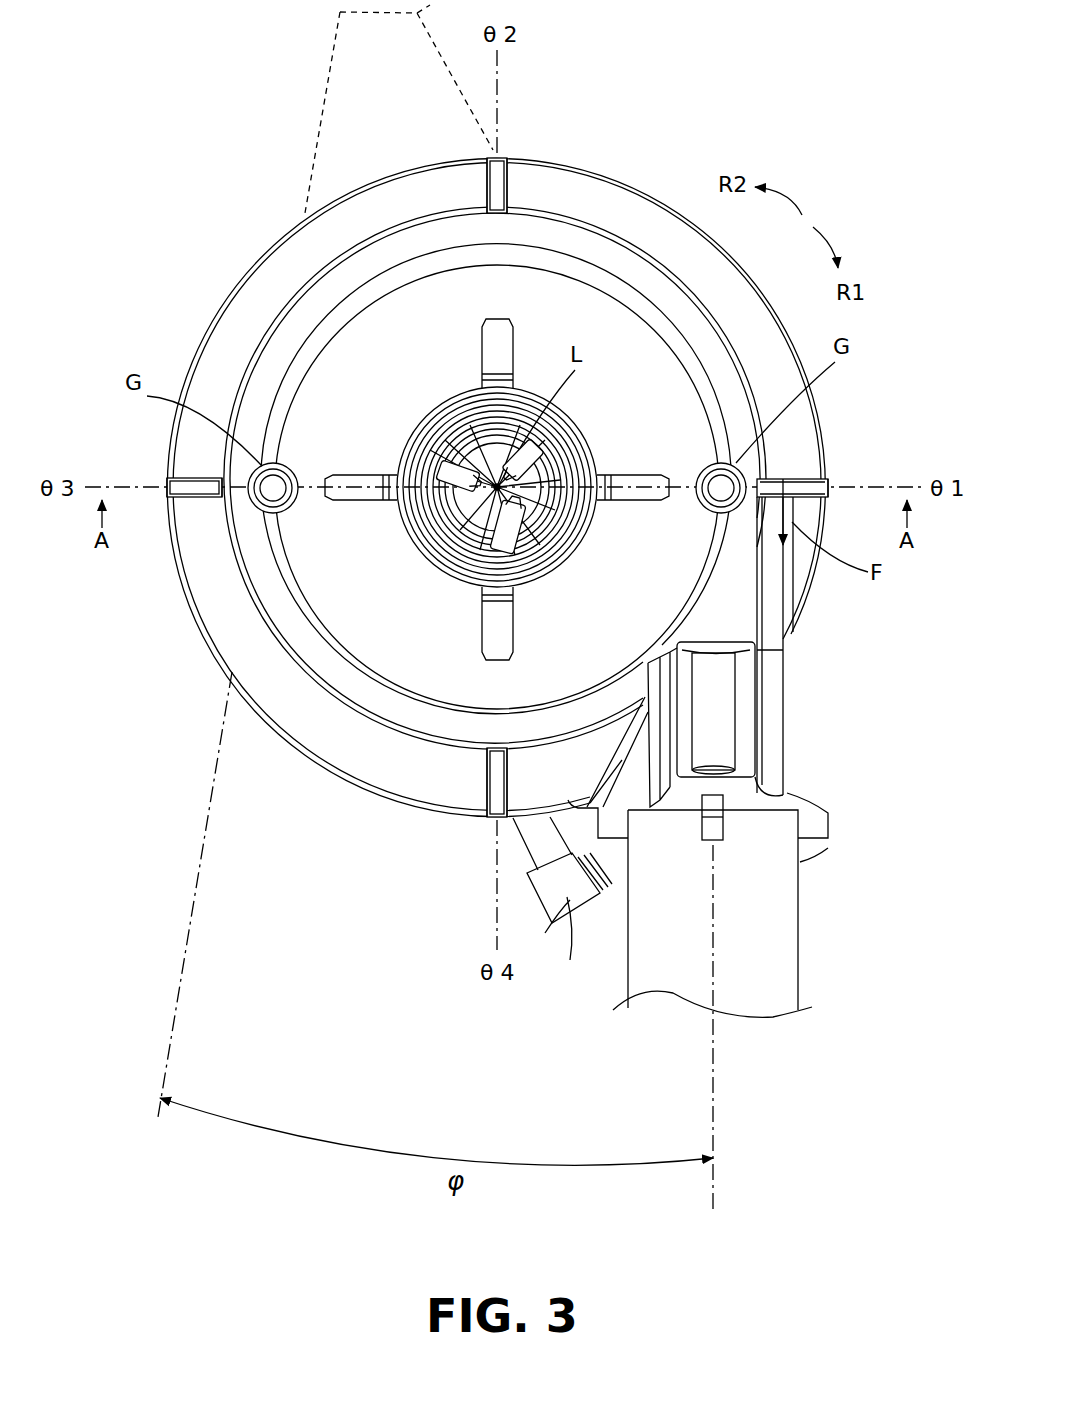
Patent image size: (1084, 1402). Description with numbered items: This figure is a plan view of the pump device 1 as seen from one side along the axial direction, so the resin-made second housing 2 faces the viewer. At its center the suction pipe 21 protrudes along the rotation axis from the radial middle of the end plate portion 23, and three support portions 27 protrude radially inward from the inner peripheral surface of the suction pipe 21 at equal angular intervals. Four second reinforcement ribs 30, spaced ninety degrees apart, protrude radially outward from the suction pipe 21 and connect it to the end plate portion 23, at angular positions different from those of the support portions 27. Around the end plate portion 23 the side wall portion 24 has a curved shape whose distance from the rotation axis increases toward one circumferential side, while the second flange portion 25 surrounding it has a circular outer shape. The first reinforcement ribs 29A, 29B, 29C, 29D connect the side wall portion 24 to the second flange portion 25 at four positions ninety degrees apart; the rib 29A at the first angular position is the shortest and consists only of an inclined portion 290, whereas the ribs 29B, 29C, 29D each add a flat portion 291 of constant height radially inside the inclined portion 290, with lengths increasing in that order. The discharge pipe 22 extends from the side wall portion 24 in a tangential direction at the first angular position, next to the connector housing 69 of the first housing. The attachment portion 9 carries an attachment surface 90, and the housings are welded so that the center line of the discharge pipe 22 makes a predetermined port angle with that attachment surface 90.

The pump device 1 is at (166, 132).
The second housing 2 is at (172, 357).
The attachment portion 9 is at (318, 56).
The attachment surface 90 is at (318, 105).
The suction pipe 21 is at (385, 608).
The discharge pipe 22 is at (782, 958).
The end plate portion 23 is at (353, 357).
The side wall portion 24 is at (282, 323).
The second flange portion 25 is at (227, 347).
The support portion 27 is at (452, 468).
The first reinforcement rib 29A is at (857, 451).
The first reinforcement rib 29B is at (620, 98).
The first reinforcement rib 29C is at (178, 647).
The first reinforcement rib 29D is at (470, 887).
The inclined portion 290 is at (812, 477).
The flat portion 291 is at (530, 210).
The second reinforcement rib 30 is at (512, 346).
The connector housing 69 is at (575, 942).